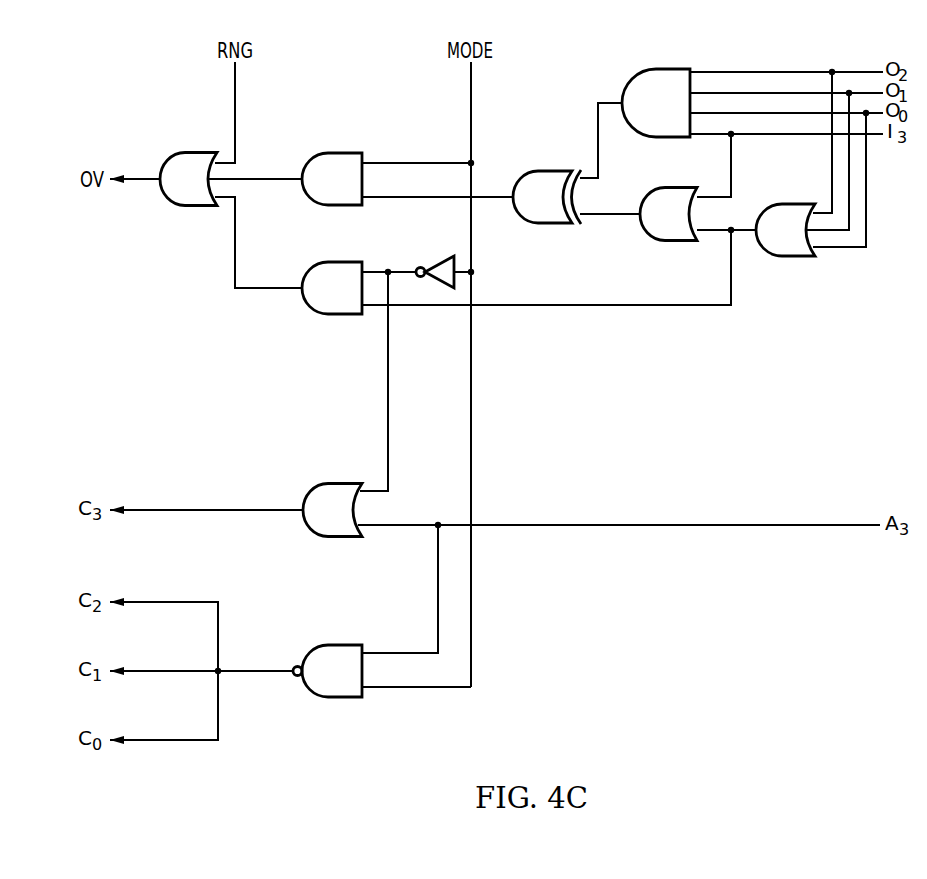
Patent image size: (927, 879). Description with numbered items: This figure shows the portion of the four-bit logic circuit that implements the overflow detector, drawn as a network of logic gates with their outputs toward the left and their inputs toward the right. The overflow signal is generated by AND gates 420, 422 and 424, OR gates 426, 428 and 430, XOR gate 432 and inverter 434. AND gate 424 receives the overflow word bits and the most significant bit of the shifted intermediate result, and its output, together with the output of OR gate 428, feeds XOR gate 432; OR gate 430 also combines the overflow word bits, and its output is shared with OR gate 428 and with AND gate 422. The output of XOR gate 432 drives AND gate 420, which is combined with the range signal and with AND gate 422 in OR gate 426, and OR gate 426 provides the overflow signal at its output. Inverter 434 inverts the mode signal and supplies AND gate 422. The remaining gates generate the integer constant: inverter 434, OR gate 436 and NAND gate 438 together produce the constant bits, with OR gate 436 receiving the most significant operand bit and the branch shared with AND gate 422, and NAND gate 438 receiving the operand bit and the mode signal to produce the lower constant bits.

The AND gate 420 is at (335, 152).
The AND gate 422 is at (335, 262).
The AND gate 424 is at (666, 68).
The OR gate 426 is at (195, 152).
The OR gate 428 is at (672, 185).
The OR gate 430 is at (786, 258).
The XOR gate 432 is at (548, 168).
The inverter 434 is at (443, 256).
The OR gate 436 is at (337, 482).
The NAND gate 438 is at (337, 645).